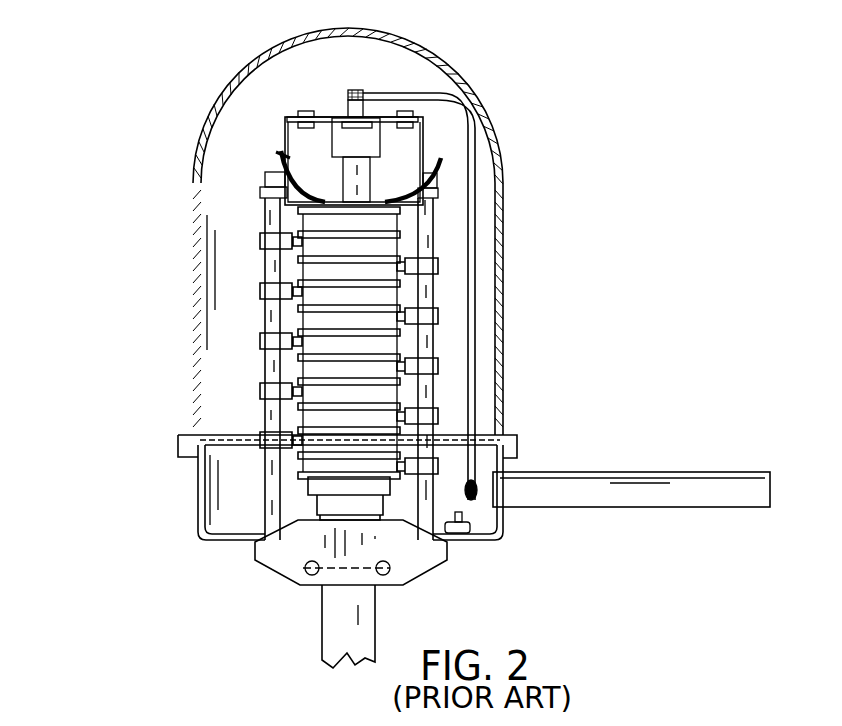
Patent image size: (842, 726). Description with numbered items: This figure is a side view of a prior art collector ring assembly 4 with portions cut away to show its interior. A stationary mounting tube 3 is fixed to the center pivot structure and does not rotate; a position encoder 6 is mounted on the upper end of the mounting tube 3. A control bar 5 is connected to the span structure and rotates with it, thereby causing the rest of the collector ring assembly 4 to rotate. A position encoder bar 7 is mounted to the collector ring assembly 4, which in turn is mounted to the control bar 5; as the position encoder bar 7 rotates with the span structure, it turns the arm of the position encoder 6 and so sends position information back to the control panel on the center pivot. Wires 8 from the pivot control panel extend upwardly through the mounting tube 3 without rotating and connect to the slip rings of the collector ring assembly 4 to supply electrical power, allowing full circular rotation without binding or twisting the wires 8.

The mounting tube 3 is at (335, 620).
The collector ring assembly 4 is at (170, 312).
The control bar 5 is at (678, 490).
The position encoder 6 is at (322, 142).
The position encoder bar 7 is at (482, 263).
The wires 8 is at (282, 156).